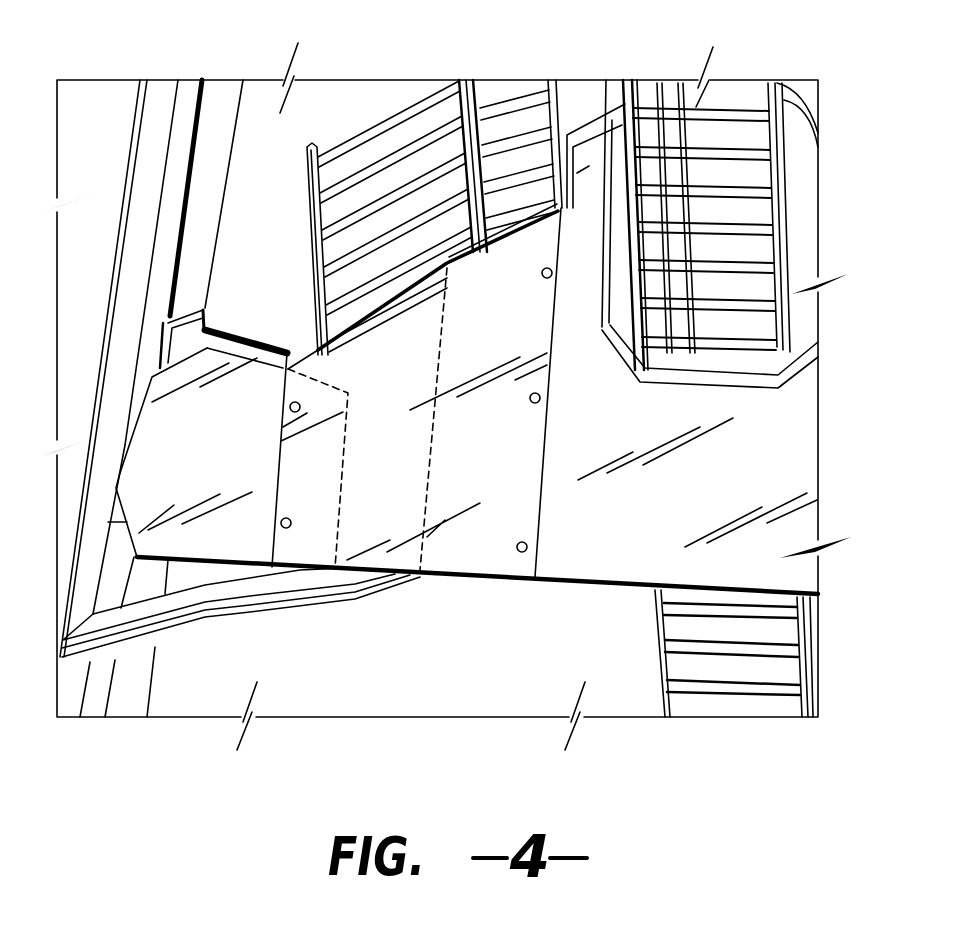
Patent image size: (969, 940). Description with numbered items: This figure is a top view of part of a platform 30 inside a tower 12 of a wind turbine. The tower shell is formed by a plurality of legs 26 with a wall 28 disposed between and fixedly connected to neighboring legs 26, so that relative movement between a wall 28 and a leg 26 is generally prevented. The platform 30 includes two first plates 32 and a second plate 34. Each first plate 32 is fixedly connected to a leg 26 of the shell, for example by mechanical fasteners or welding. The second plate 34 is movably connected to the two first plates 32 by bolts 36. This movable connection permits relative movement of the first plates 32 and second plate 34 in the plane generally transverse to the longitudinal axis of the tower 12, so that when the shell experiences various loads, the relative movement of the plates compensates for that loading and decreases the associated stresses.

The tower 12 is at (402, 62).
The leg 26 is at (152, 168).
The wall 28 is at (350, 107).
The platform 30 is at (296, 343).
The first plate 32 is at (216, 533).
The second plate 34 is at (376, 513).
The bolt 36 is at (530, 401).